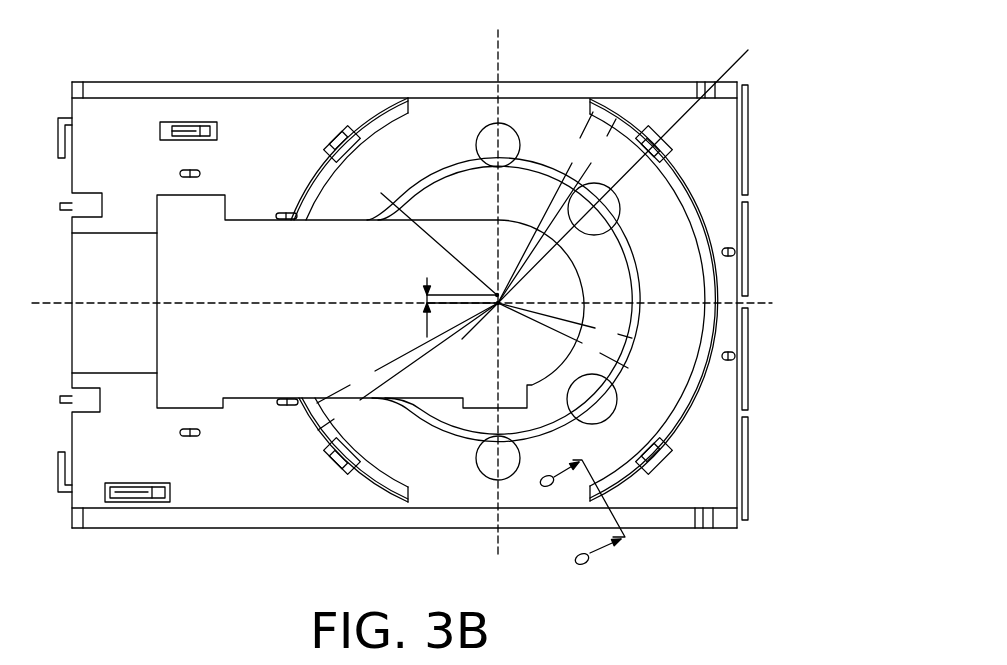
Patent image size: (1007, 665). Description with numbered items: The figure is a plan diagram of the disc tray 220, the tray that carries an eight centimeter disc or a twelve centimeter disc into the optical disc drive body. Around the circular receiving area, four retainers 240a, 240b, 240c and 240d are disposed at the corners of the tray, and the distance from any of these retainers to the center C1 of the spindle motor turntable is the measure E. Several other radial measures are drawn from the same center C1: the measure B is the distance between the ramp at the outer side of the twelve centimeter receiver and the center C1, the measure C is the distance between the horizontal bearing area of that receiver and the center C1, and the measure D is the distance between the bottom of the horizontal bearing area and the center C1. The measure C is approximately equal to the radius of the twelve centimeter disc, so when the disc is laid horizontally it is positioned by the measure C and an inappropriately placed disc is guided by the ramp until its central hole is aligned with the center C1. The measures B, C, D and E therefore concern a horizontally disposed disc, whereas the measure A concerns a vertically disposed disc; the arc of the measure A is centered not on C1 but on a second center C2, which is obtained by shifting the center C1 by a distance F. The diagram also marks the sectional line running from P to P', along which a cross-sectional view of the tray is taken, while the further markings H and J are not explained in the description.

The disc tray 220 is at (862, 30).
The retainer 240a is at (670, 463).
The retainer 240b is at (332, 463).
The retainer 240c is at (668, 150).
The retainer 240d is at (340, 134).
The center of spindle motor turntable C1 is at (501, 310).
The circular center of arc of measure A C2 is at (494, 291).
The distance F is at (448, 298).
The measure E is at (429, 233).
The measure A is at (545, 207).
The measure B is at (557, 211).
The reference line H is at (563, 335).
The reference line J is at (565, 322).
The measure D is at (407, 353).
The measure C is at (408, 366).
The sectional line endpoint P is at (480, 350).
The sectional line endpoint P' is at (644, 176).